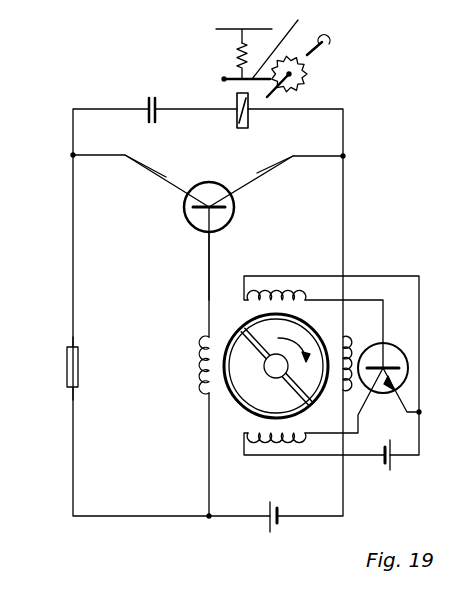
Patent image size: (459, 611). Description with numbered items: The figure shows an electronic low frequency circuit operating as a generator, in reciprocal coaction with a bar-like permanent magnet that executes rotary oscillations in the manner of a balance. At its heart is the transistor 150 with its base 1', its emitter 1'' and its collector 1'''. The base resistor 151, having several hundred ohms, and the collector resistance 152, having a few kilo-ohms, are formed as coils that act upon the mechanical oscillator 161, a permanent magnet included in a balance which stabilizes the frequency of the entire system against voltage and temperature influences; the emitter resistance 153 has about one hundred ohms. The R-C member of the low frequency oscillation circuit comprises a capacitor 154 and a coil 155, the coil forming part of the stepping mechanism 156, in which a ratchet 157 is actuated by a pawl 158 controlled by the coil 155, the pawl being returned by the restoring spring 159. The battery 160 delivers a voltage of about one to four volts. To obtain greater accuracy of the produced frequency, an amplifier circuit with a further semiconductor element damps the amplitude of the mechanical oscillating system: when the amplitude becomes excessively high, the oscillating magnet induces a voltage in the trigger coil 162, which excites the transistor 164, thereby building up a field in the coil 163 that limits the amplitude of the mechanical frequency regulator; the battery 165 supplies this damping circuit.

The transistor 150 is at (235, 210).
The base resistor 151 is at (195, 380).
The collector resistance 152 is at (353, 318).
The emitter resistance 153 is at (72, 367).
The capacitor 154 is at (148, 100).
The coil 155 is at (240, 118).
The stepping mechanism 156 is at (326, 52).
The ratchet 157 is at (307, 83).
The pawl 158 is at (286, 43).
The restoring spring 159 is at (238, 52).
The battery 160 is at (279, 521).
The mechanical oscillator 161 is at (232, 398).
The trigger coil 162 is at (293, 280).
The coil 163 is at (265, 443).
The transistor 164 is at (405, 347).
The battery 165 is at (395, 462).
The base 1' is at (128, 266).
The emitter 1'' is at (111, 129).
The collector 1''' is at (327, 132).